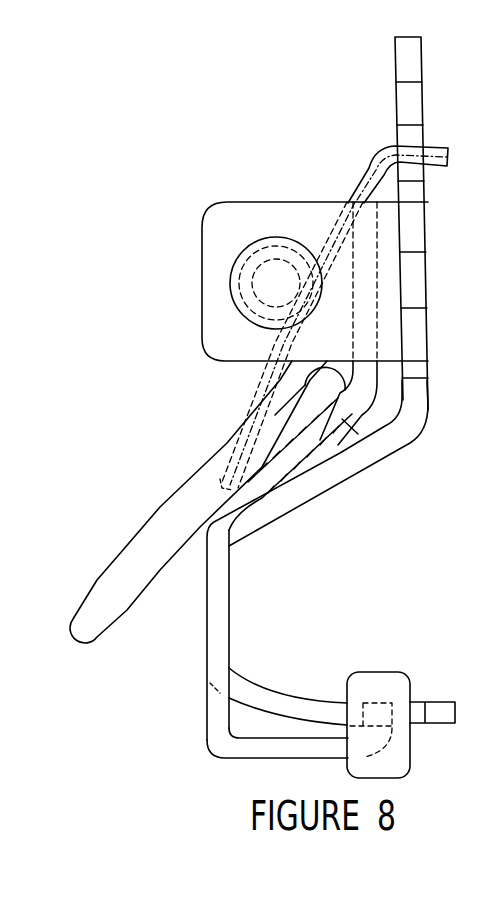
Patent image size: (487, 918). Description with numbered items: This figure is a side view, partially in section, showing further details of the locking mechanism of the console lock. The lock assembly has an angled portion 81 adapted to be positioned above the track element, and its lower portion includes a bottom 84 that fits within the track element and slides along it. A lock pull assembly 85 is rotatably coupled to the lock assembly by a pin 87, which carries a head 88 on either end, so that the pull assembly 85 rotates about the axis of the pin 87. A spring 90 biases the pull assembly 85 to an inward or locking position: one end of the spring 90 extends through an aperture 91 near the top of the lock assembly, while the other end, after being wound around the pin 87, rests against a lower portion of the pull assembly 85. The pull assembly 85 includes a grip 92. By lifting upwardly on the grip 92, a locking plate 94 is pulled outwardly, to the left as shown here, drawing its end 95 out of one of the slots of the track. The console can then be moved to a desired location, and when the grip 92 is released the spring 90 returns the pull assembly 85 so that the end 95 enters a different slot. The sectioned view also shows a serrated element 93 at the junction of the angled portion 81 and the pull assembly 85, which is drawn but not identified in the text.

The bracket 81 is at (368, 465).
The base foot of bracket 84 is at (290, 758).
The latch assembly 85 is at (169, 472).
The hole 87 is at (274, 276).
The mounting pad 88 is at (242, 250).
The hook end of arm 90 is at (443, 167).
The upright post 91 is at (424, 137).
The lever arm 92 is at (102, 565).
The spring tongue 93 is at (280, 497).
The spring wire 94 is at (275, 694).
The connector block 95 is at (440, 702).